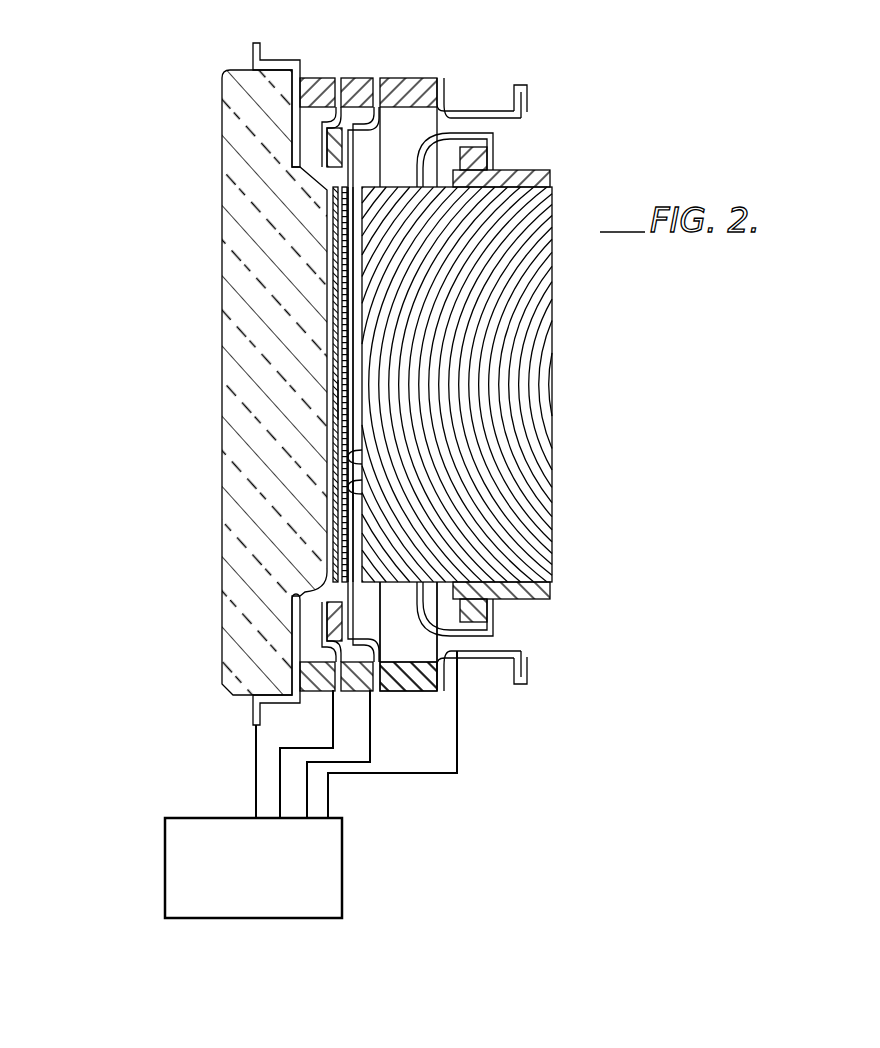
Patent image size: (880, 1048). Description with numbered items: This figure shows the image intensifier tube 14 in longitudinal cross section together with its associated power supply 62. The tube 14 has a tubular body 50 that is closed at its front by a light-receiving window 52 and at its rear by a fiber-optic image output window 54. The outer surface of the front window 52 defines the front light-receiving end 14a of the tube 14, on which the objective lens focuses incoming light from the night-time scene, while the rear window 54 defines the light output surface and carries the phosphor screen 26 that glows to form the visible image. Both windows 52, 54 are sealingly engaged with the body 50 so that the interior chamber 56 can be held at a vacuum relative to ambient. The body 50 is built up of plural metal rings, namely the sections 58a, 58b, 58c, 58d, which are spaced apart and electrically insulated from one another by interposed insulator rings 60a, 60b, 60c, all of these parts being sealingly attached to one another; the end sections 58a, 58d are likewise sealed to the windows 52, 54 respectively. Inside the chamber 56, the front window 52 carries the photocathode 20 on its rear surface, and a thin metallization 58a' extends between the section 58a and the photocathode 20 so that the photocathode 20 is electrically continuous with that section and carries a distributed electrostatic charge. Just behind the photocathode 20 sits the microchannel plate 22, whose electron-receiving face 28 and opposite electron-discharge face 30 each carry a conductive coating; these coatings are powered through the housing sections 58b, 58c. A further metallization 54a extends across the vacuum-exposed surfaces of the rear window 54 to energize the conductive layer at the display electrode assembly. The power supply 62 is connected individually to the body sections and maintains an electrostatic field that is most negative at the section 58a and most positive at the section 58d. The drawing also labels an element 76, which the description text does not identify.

The image intensifier tube 14 is at (603, 133).
The front light-receiving end 14a is at (229, 110).
The photocathode 20 is at (345, 294).
The microchannel plate 22 is at (338, 252).
The phosphor screen 26 is at (345, 450).
The electron-receiving face 28 is at (343, 397).
The electron-discharge face 30 is at (360, 498).
The tubular body 50 is at (450, 75).
The front light-receiving window 52 is at (222, 527).
The rear fiber-optic image output window 54 is at (548, 506).
The metallization 54a is at (421, 178).
The interior chamber 56 is at (402, 110).
The end body section 58a is at (294, 85).
The thin metallization 58a' is at (244, 426).
The body section 58b is at (336, 78).
The body section 58c is at (375, 97).
The end body section 58d is at (483, 108).
The insulator ring 60a is at (322, 692).
The insulator ring 60b is at (355, 692).
The insulator ring 60c is at (405, 692).
The power supply 62 is at (342, 850).
The insulating sheet 76 is at (343, 162).